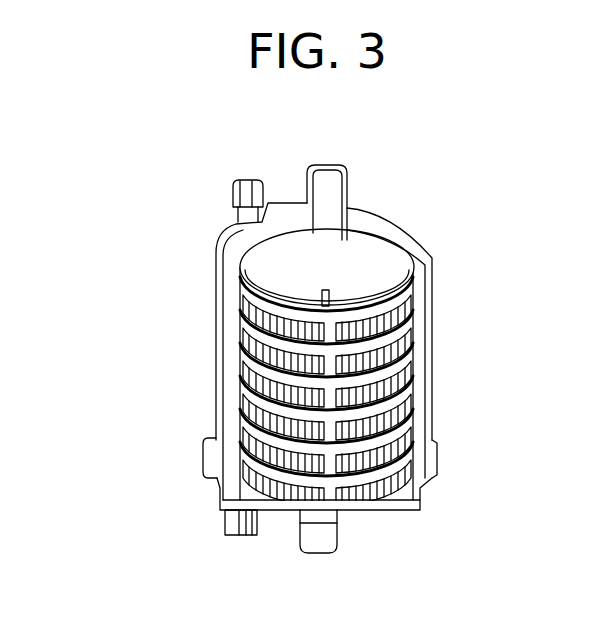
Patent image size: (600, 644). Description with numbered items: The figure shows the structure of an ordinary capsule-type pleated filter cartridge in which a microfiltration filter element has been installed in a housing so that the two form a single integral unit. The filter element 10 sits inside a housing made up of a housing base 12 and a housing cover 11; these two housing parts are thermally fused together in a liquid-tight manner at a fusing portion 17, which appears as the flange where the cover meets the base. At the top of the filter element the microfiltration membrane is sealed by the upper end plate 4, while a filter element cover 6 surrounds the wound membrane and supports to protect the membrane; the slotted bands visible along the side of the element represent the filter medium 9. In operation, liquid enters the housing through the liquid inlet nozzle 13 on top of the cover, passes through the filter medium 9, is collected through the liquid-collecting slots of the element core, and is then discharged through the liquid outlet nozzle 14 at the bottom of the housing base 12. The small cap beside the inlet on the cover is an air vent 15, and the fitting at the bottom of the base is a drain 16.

The upper end plate 4 is at (320, 275).
The filter element cover 6 is at (318, 324).
The filter medium 9 is at (300, 398).
The filter element 10 is at (417, 398).
The housing cover 11 is at (427, 353).
The housing base 12 is at (403, 502).
The liquid inlet nozzle 13 is at (330, 190).
The liquid outlet nozzle 14 is at (327, 541).
The air vent 15 is at (235, 192).
The drain 16 is at (235, 537).
The fusing portion 17 is at (208, 449).